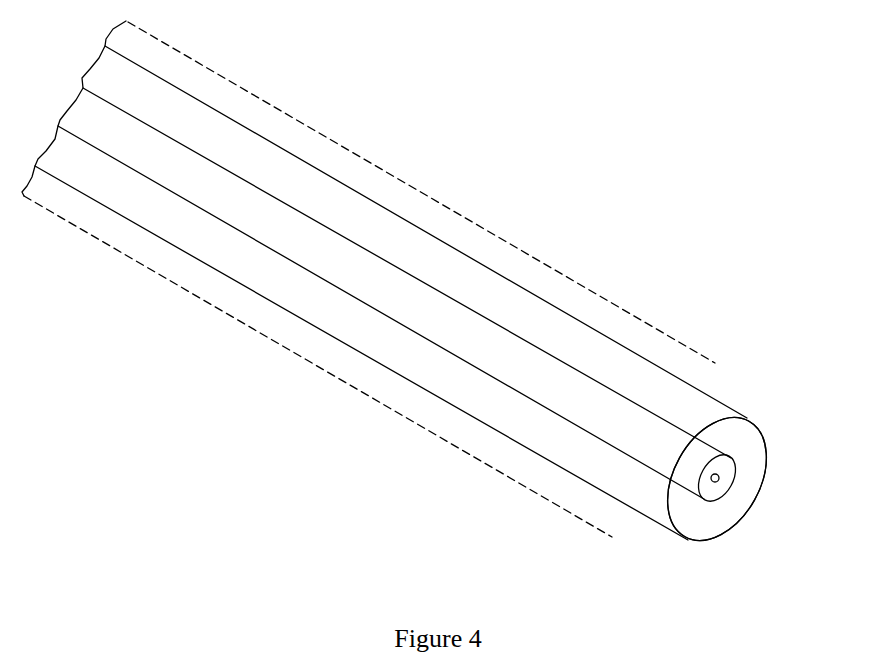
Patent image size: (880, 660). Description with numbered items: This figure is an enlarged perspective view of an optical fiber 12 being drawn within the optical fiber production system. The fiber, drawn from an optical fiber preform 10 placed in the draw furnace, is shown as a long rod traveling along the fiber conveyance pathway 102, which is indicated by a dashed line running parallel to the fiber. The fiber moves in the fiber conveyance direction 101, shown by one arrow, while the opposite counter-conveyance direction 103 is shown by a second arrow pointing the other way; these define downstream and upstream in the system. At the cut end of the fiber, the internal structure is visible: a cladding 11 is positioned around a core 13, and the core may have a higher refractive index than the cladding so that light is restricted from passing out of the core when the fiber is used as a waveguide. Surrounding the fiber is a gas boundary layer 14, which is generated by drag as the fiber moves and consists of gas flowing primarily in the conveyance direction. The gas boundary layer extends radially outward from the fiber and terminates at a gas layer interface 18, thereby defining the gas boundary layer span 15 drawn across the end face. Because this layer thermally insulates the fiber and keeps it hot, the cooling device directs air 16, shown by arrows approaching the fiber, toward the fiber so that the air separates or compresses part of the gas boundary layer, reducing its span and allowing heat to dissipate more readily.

The optical fiber preform 10 is at (763, 530).
The cladding 11 is at (674, 429).
The optical fiber 12 is at (429, 288).
The core 13 is at (712, 482).
The gas boundary layer 14 is at (672, 370).
The optical fiber 15 is at (691, 535).
The air 16 is at (785, 492).
The gas layer interface 18 is at (588, 347).
The fiber conveyance direction 101 is at (342, 425).
The fiber conveyance pathway 102 is at (390, 171).
The counter-conveyance direction 103 is at (280, 390).